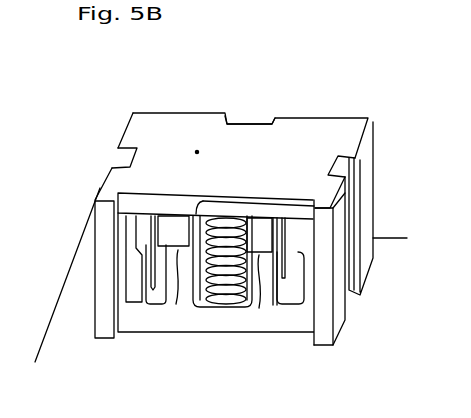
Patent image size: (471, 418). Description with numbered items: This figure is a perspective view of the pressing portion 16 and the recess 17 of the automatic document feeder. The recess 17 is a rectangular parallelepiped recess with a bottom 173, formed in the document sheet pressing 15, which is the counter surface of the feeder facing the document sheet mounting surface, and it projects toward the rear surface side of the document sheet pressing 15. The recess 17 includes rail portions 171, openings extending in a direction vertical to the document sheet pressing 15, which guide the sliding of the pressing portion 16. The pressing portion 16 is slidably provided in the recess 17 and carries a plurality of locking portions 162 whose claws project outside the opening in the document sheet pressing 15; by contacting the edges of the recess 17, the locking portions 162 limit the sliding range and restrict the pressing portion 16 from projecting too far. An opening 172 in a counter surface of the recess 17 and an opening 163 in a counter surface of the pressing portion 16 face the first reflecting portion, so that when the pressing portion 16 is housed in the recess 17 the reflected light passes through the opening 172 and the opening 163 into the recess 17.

The document sheet pressing 15 is at (72, 283).
The pressing portion 16 is at (144, 320).
The recess 17 is at (161, 113).
The locking portions 162 is at (356, 198).
The opening 163 is at (207, 315).
The rail portions 171 is at (106, 152).
The opening 172 is at (203, 201).
The bottom 173 is at (198, 140).